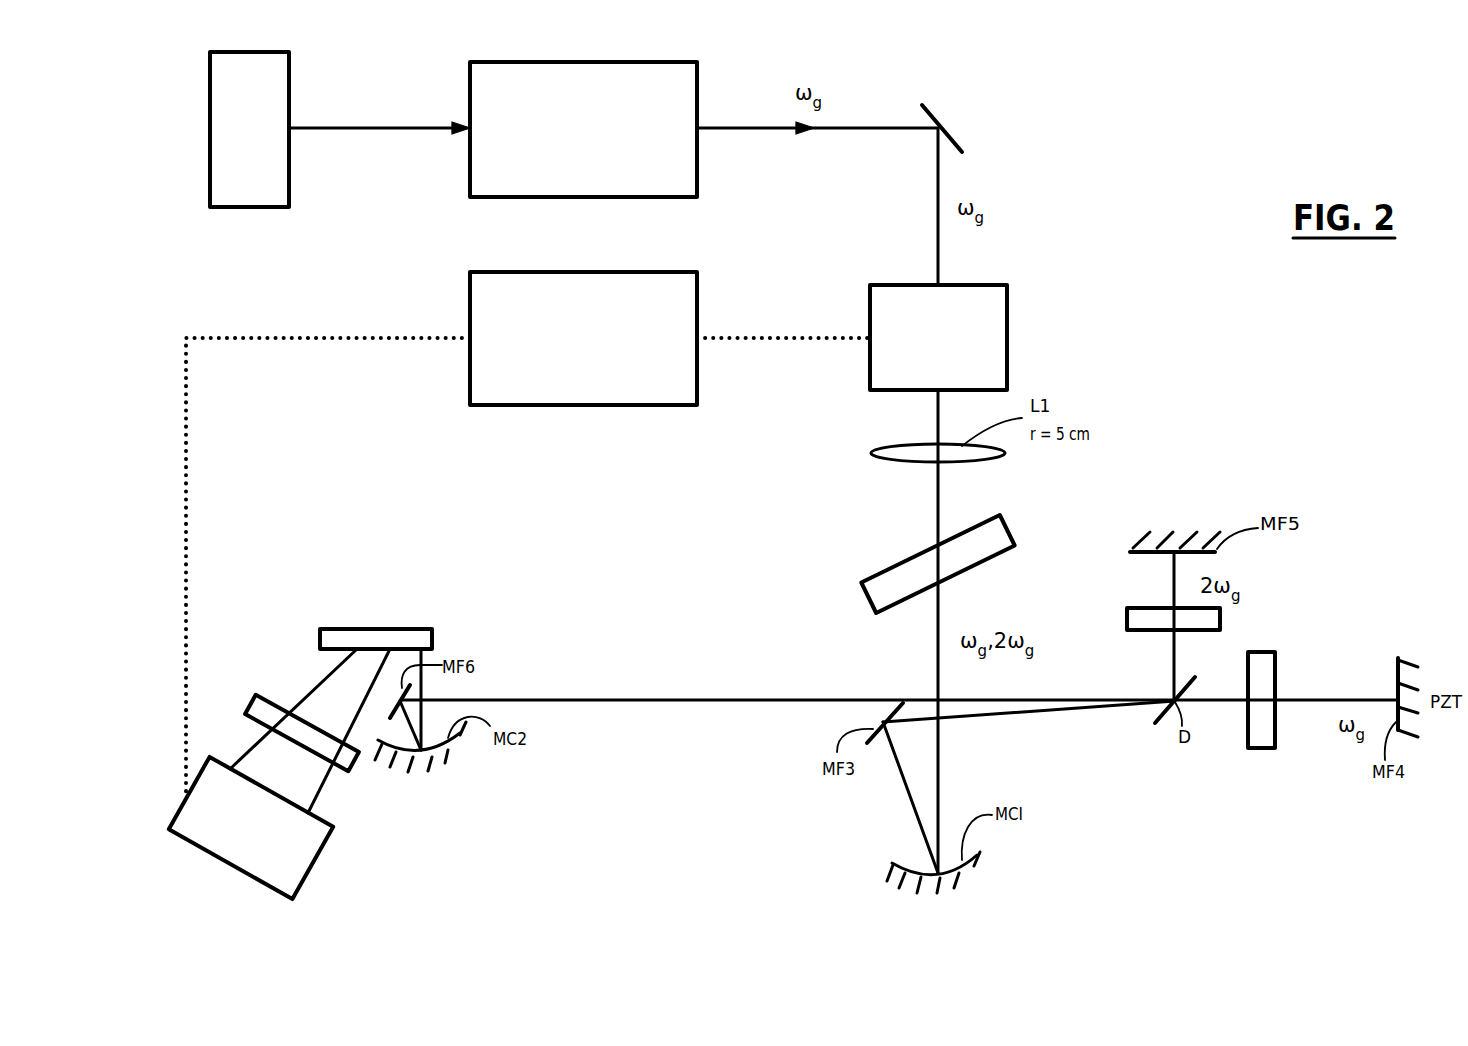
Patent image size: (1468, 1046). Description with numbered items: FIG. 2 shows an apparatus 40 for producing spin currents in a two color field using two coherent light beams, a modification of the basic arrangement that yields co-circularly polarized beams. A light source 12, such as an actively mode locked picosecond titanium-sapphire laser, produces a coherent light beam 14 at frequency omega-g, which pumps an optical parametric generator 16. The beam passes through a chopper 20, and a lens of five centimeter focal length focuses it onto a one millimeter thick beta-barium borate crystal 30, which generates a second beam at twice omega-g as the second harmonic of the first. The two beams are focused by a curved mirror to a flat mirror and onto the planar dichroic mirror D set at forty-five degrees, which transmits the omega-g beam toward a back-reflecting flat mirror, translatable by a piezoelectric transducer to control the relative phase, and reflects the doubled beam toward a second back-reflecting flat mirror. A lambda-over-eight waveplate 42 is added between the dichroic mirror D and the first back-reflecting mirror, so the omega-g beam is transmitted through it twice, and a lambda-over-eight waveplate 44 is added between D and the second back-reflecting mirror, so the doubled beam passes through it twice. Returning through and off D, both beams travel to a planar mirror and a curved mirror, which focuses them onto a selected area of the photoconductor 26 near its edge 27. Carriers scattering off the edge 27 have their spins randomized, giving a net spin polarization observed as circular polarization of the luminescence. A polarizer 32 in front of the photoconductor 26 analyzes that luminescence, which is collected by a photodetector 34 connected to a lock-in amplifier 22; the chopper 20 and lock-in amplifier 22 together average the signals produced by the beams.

The light source 12 is at (261, 144).
The optical parametric generator 16 is at (597, 144).
The coherent light beam 14 is at (877, 128).
The apparatus 40 is at (1033, 115).
The lock-in amplifier 22 is at (597, 353).
The chopper 20 is at (951, 351).
The β-barium borate (BBO) crystal 30 is at (950, 577).
The photoconductor 26 is at (358, 628).
The edge 27 is at (433, 642).
The polarizer 32 is at (357, 763).
The photodetector 34 is at (263, 849).
The λ/8 waveplate 44 is at (1147, 607).
The λ/8 waveplate 42 is at (1277, 675).